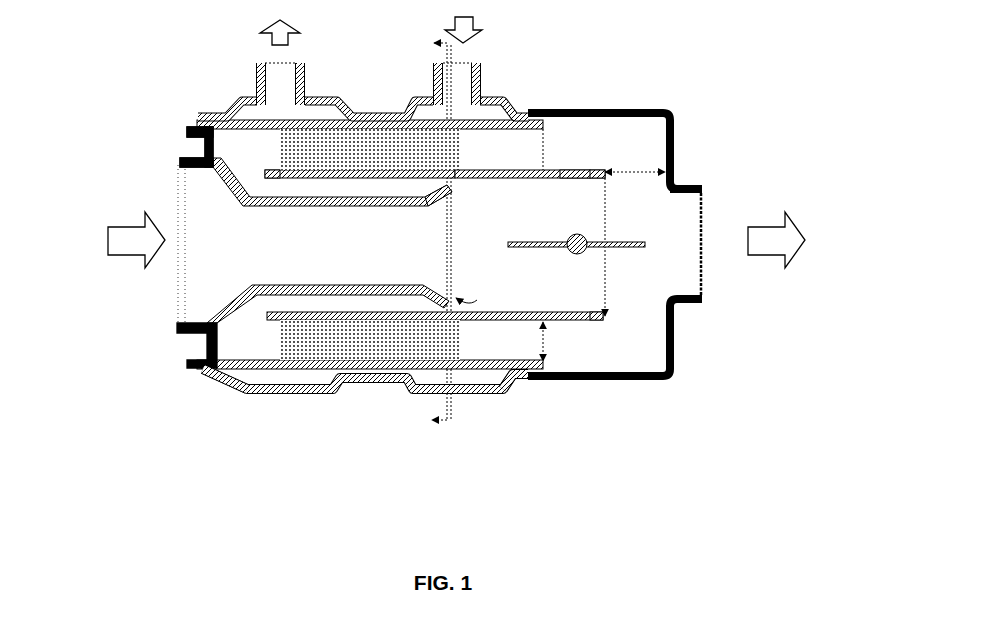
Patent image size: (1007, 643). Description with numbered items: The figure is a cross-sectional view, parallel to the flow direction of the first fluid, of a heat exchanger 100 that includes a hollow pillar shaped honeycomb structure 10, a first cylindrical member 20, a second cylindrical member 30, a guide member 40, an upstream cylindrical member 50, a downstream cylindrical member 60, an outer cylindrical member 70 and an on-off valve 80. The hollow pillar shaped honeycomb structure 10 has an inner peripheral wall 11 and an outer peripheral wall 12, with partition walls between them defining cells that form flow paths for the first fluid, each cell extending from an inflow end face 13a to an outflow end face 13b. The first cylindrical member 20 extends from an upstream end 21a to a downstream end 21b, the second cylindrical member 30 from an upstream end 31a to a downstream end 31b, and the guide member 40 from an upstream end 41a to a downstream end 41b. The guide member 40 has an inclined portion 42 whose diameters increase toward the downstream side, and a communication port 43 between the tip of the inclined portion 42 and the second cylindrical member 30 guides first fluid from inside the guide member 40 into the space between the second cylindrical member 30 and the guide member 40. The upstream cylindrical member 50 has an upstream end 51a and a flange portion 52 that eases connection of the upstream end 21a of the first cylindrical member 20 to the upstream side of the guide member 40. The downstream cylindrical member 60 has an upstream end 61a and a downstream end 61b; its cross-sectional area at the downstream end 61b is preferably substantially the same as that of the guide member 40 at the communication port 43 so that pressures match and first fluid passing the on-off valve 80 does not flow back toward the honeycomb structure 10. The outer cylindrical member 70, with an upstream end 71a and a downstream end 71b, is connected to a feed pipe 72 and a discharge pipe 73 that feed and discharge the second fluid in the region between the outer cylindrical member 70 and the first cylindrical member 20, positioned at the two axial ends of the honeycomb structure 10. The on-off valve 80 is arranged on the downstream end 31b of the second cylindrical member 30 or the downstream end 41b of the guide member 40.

The heat exchanger 100 is at (440, 531).
The hollow pillar shaped honeycomb structure 10 is at (360, 390).
The inner peripheral wall 11 is at (318, 322).
The outer peripheral wall 12 is at (365, 335).
The inflow end face 13a is at (247, 386).
The outflow end face 13b is at (470, 363).
The first cylindrical member 20 is at (512, 379).
The upstream end 21a is at (193, 363).
The downstream end 21b is at (587, 378).
The second cylindrical member 30 is at (507, 170).
The upstream end 31a is at (267, 170).
The downstream end 31b is at (607, 171).
The guide member 40 is at (243, 202).
The upstream end 41a is at (178, 165).
The downstream end 41b is at (567, 170).
The inclined portion 42 is at (445, 190).
The communication port 43 is at (455, 180).
The upstream cylindrical member 50 is at (187, 160).
The upstream end 51a is at (178, 157).
The flange portion 52 is at (190, 127).
The downstream cylindrical member 60 is at (676, 142).
The upstream end 61a is at (521, 110).
The downstream end 61b is at (704, 188).
The outer cylindrical member 70 is at (275, 394).
The upstream end 71a is at (204, 372).
The downstream end 71b is at (560, 380).
The feed pipe 72 is at (481, 76).
The discharge pipe 73 is at (305, 78).
The on-off valve 80 is at (588, 258).